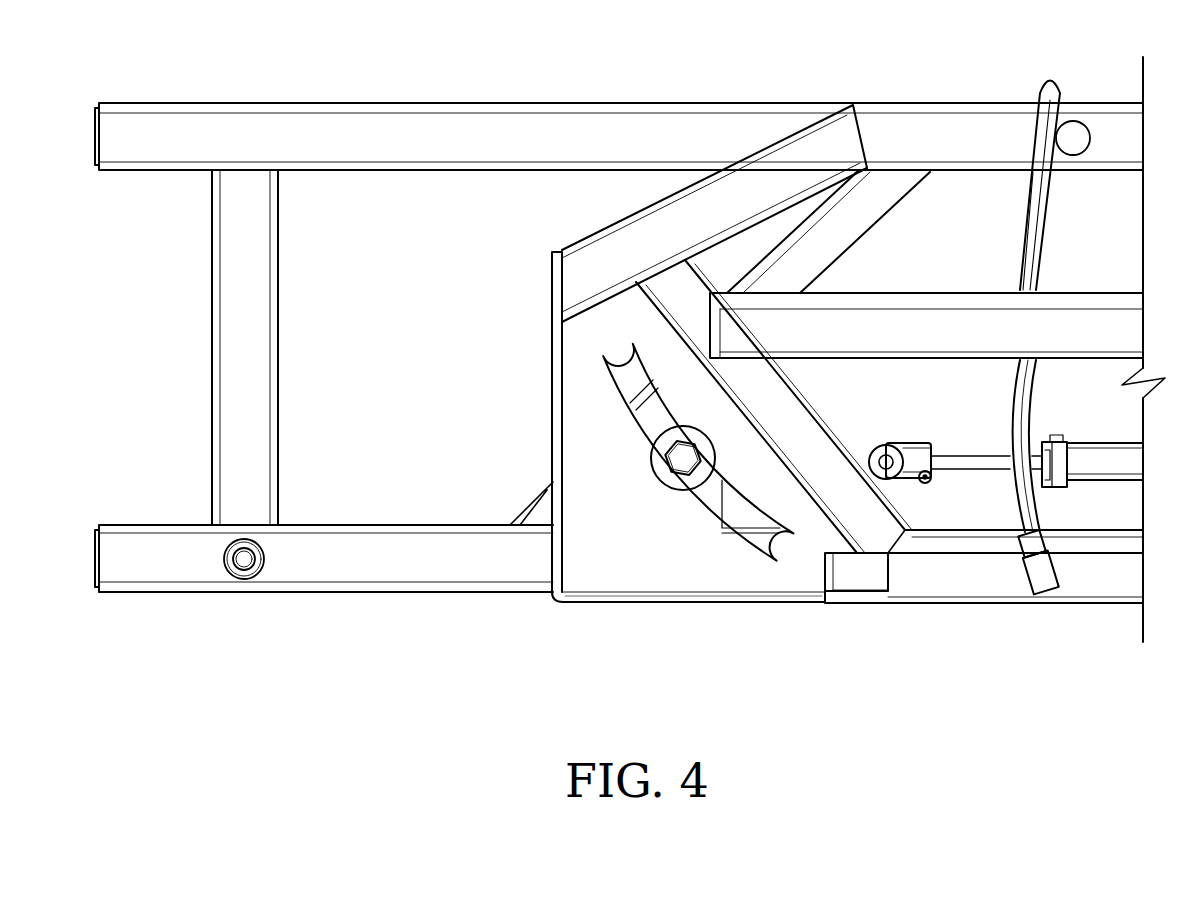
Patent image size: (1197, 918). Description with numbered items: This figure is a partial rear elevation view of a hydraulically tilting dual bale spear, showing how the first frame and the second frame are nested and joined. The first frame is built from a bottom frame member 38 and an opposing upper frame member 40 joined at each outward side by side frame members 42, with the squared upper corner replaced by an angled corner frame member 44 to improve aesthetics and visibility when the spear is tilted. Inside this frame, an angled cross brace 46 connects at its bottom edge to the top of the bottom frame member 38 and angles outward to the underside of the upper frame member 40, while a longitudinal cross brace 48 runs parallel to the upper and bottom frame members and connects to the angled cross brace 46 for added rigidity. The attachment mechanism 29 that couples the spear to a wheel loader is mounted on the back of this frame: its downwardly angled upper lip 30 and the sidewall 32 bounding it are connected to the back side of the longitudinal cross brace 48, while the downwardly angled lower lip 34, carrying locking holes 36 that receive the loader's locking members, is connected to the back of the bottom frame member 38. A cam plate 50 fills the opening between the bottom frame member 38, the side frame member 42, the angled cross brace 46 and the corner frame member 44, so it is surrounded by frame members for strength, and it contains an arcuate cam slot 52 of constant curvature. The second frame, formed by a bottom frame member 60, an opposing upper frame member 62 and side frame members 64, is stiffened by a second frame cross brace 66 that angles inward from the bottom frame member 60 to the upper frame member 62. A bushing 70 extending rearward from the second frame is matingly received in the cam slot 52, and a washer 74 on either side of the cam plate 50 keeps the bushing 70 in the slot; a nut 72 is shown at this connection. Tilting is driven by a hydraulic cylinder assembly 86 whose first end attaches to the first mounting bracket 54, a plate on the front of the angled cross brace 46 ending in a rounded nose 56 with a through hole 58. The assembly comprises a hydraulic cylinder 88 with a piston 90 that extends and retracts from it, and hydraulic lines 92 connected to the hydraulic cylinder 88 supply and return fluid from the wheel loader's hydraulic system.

The attachment mechanism 29 is at (898, 289).
The upper lip 30 is at (985, 292).
The sidewall 32 is at (685, 292).
The lower lip 34 is at (912, 605).
The locking holes 36 is at (850, 578).
The bottom frame member 38 is at (716, 607).
The upper frame member 40 is at (1090, 173).
The side frame members 42 is at (549, 357).
The corner frame member 44 is at (638, 210).
The angled cross braces 46 is at (803, 390).
The longitudinal cross brace 48 is at (923, 360).
The cam plate 50 is at (610, 553).
The cam slot 52 is at (707, 507).
The first mounting bracket 54 is at (868, 440).
The rounded nose 56 is at (890, 440).
The through hole 58 is at (900, 480).
The bottom frame member 60 is at (310, 594).
The upper frame member 62 is at (333, 104).
The side frame members 64 is at (212, 376).
The second frame cross braces 66 is at (913, 197).
The bushing 70 is at (663, 430).
The hex nut 72 is at (676, 460).
The washer 74 is at (652, 458).
The hydraulic cylinder assembly 86 is at (1086, 430).
The hydraulic cylinder 88 is at (1095, 470).
The piston 90 is at (983, 452).
The hydraulic lines 92 is at (1050, 568).